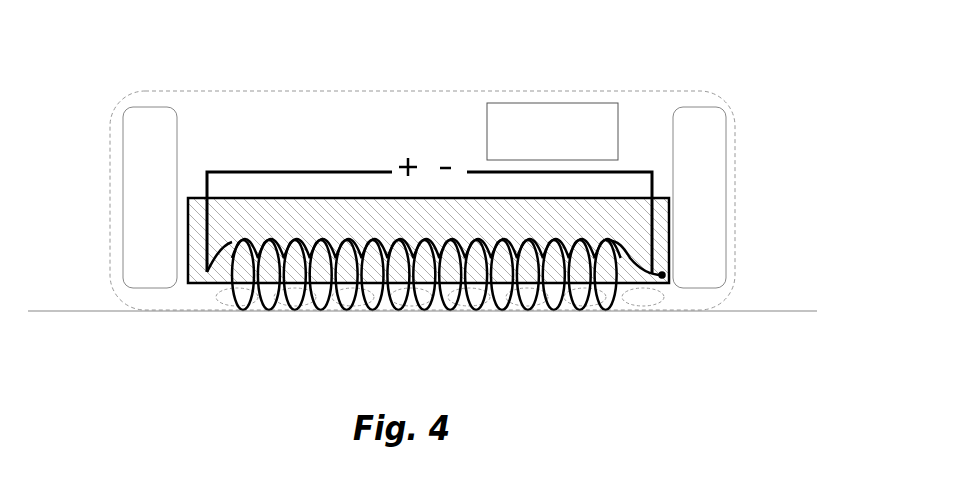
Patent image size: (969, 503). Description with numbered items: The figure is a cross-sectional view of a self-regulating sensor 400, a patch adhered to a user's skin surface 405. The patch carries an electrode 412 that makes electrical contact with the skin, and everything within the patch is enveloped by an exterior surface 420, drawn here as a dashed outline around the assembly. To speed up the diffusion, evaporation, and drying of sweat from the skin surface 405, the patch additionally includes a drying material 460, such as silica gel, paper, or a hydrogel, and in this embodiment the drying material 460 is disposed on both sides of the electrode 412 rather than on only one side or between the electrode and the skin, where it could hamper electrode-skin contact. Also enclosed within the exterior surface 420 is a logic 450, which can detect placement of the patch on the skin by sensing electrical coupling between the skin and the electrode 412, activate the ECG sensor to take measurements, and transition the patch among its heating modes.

The self-regulating sensor 400 is at (400, 55).
The skin surface 405 is at (770, 311).
The electrode 412 is at (192, 283).
The exterior surface 420 is at (557, 90).
The logic 450 is at (580, 148).
The drying material 460 is at (138, 125).